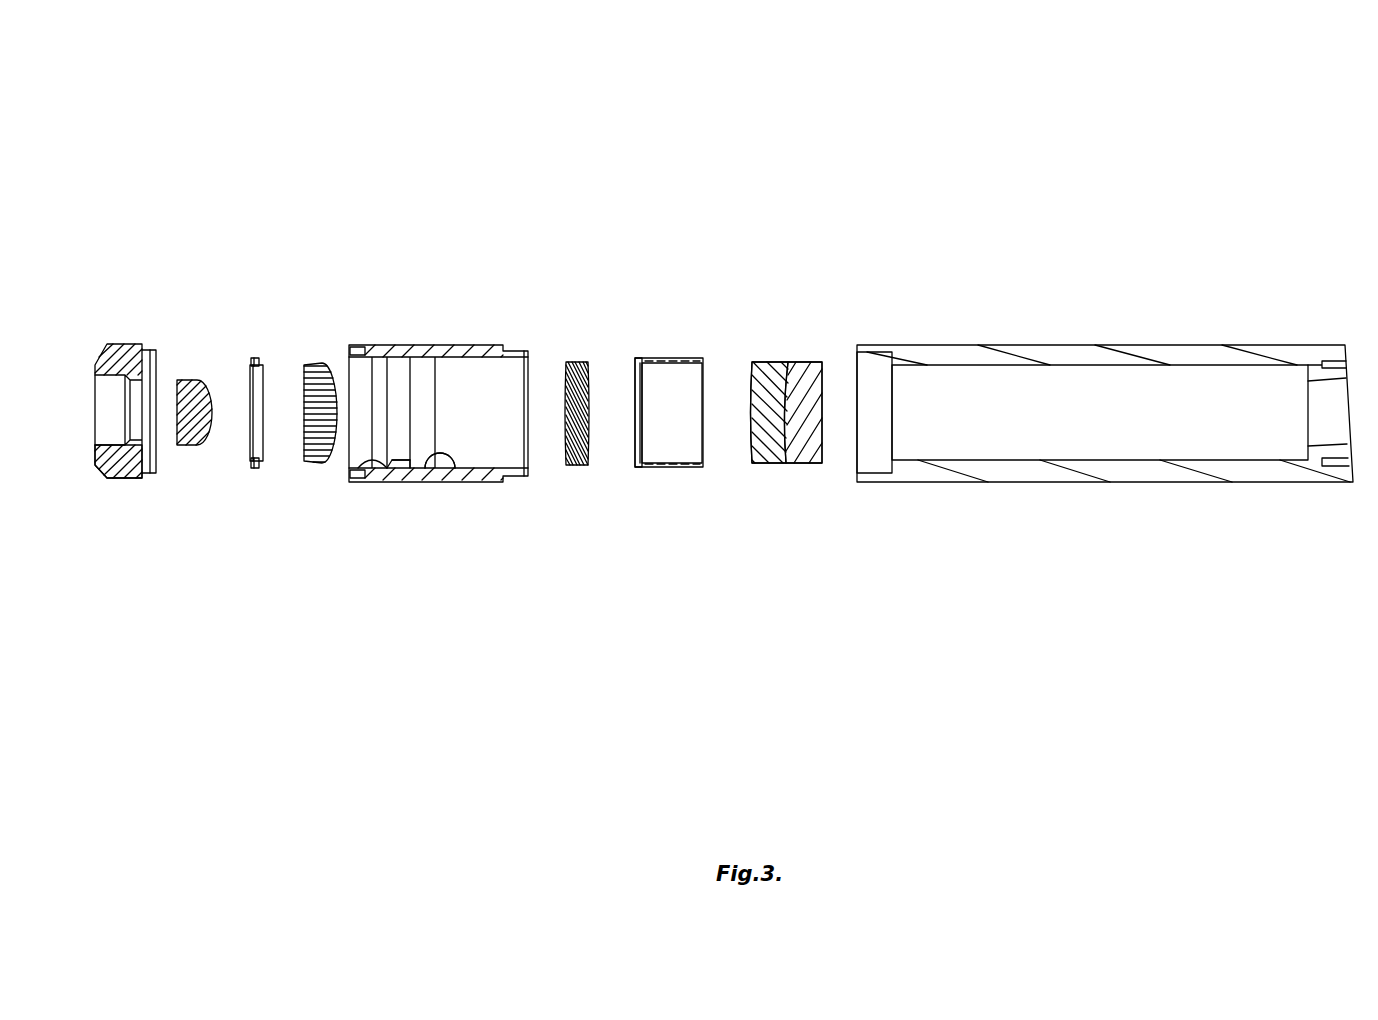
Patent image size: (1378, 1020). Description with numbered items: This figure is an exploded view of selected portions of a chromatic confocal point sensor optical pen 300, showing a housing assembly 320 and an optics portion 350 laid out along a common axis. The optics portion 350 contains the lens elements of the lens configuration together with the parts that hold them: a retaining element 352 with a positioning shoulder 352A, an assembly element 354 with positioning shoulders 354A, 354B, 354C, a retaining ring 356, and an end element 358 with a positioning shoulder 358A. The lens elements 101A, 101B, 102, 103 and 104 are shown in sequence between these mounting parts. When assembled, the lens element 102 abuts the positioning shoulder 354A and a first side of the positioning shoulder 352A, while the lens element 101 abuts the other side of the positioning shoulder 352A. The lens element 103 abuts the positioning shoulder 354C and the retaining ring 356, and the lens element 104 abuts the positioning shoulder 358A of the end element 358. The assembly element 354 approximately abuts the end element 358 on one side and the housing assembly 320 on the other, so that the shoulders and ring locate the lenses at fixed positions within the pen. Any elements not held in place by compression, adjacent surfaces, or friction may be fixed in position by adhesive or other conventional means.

The chromatic confocal point sensor optical pen 300 is at (1291, 127).
The optics portion 350 is at (843, 188).
The housing assembly 320 is at (1083, 345).
The end element 358 is at (131, 344).
The positioning shoulder 358A is at (100, 448).
The lens element 104 is at (182, 380).
The retaining ring 356 is at (253, 358).
The lens element 103 is at (312, 363).
The assembly element 354 is at (444, 345).
The positioning shoulder 354A is at (416, 470).
The positioning shoulder 354B is at (452, 470).
The positioning shoulder 354C is at (370, 468).
The lens element 102 is at (580, 362).
The retaining element 352 is at (672, 360).
The positioning shoulder 352A is at (636, 462).
The lens element 101 is at (842, 262).
The lens element 101A is at (803, 362).
The lens element 101B is at (770, 362).